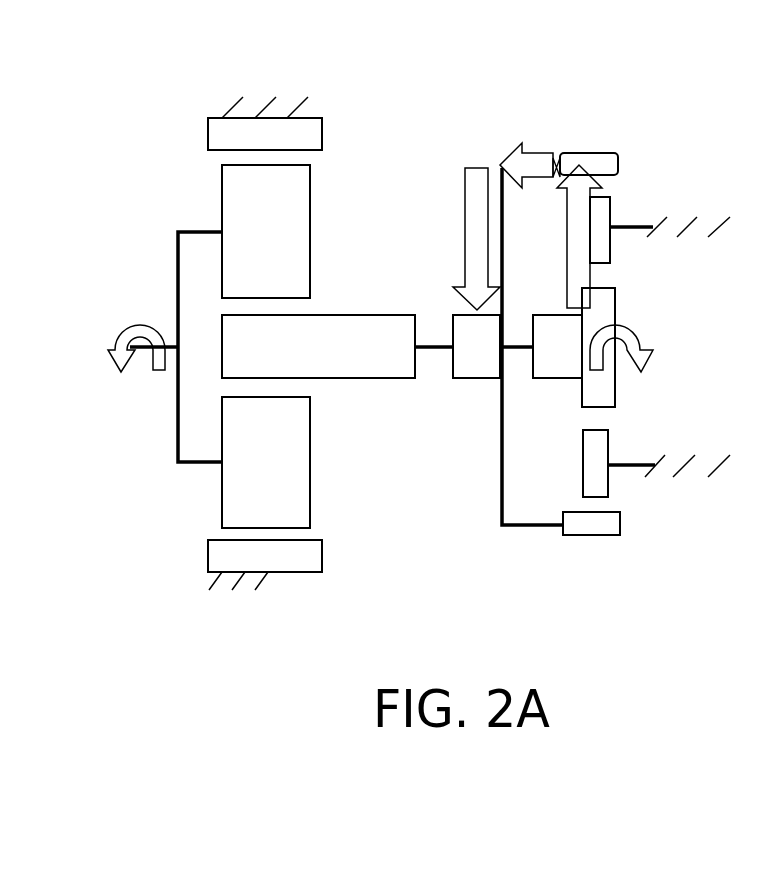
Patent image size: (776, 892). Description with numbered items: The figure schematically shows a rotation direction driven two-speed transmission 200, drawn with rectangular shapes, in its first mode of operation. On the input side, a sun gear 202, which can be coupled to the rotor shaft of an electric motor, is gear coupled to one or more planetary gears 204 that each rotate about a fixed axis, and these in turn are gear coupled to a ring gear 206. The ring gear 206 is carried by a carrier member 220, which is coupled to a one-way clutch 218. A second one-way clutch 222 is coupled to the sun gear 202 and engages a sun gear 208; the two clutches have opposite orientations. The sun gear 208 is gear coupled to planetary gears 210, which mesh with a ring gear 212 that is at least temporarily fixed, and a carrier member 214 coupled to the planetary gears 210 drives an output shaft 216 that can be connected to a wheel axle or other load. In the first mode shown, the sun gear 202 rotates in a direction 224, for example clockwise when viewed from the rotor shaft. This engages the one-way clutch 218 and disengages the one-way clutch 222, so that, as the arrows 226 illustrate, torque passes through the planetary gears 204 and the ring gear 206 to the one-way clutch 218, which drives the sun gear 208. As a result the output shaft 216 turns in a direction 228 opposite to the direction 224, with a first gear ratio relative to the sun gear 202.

The transmission 200 is at (680, 42).
The sun gear 202 is at (615, 387).
The planetary gears 204 is at (610, 215).
The ring gear 206 is at (618, 164).
The sun gear 208 is at (299, 358).
The planetary gears 210 is at (247, 242).
The ring gear 212 is at (246, 146).
The carrier member 214 is at (184, 230).
The output shaft 216 is at (140, 356).
The one-way clutch 218 is at (457, 358).
The carrier member 220 is at (500, 444).
The one-way clutch 222 is at (538, 358).
The direction 224 is at (643, 338).
The arrows 226 is at (465, 215).
The direction 228 is at (138, 323).